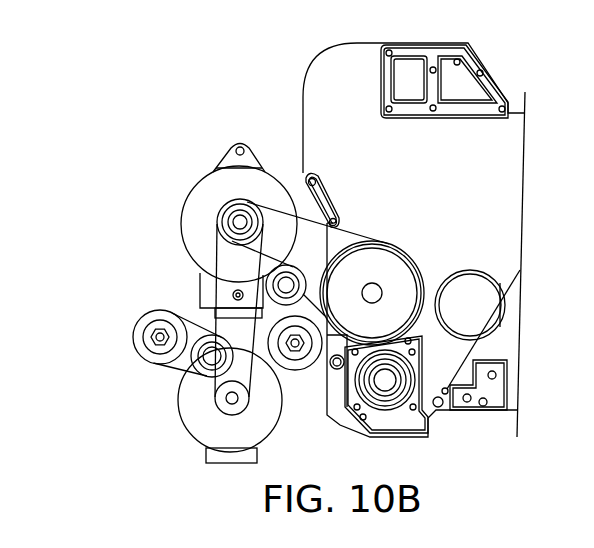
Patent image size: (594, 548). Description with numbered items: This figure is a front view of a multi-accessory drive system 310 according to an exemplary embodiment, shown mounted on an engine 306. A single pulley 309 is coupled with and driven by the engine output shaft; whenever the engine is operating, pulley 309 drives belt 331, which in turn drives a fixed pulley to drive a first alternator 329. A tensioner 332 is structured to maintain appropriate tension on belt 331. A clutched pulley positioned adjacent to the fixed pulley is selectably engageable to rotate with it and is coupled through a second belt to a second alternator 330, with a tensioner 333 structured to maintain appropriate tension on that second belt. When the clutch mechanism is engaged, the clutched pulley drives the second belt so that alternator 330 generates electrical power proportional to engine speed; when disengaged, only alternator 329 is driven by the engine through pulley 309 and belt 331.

The engine 306 is at (498, 162).
The single pulley 309 is at (392, 280).
The multi-accessory drive system 310 is at (216, 104).
The alternator 329 is at (181, 192).
The alternator 330 is at (175, 392).
The belt 331 is at (347, 218).
The tensioner 332 is at (305, 382).
The tensioner 333 is at (142, 315).